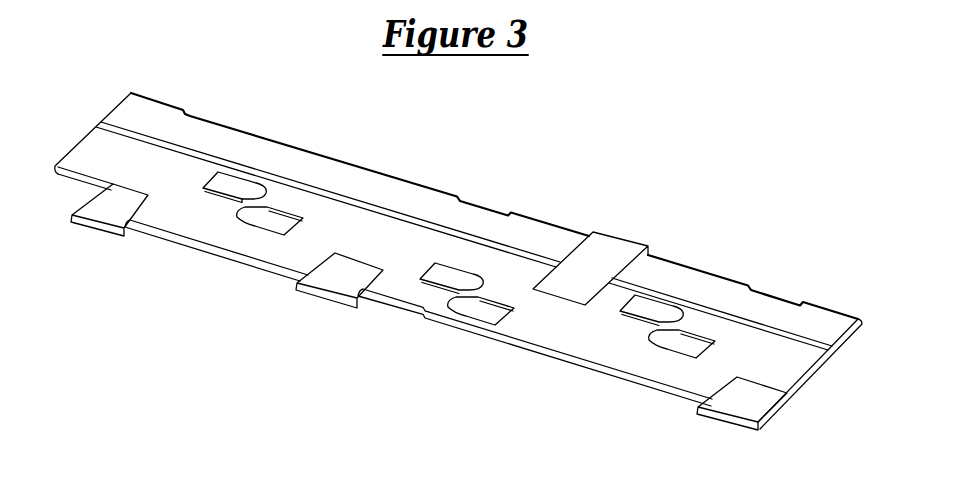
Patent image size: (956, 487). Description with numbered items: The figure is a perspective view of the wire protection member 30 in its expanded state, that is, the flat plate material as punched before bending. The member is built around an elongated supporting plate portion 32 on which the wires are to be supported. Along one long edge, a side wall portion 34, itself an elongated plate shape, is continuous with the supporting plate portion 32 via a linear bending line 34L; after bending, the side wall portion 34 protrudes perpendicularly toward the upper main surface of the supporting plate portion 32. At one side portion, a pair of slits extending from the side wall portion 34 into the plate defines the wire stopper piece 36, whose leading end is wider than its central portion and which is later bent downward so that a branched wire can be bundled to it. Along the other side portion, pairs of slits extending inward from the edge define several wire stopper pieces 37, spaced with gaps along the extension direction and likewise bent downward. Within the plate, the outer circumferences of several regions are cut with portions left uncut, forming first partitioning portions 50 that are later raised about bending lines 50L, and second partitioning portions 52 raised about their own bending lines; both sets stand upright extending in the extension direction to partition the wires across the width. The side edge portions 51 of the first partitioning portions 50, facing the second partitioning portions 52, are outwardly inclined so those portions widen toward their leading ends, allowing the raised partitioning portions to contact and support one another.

The wire protection member 30 is at (552, 216).
The supporting plate portion 32 is at (581, 347).
The side wall portion 34 is at (415, 183).
The bending line 34L is at (350, 200).
The wire stopper piece 36 is at (622, 239).
The wire stopper pieces 37 is at (97, 222).
The first partitioning portions 50 is at (240, 176).
The bending lines 50L is at (215, 194).
The side edge portions 51 is at (270, 192).
The second partitioning portions 52 is at (257, 227).